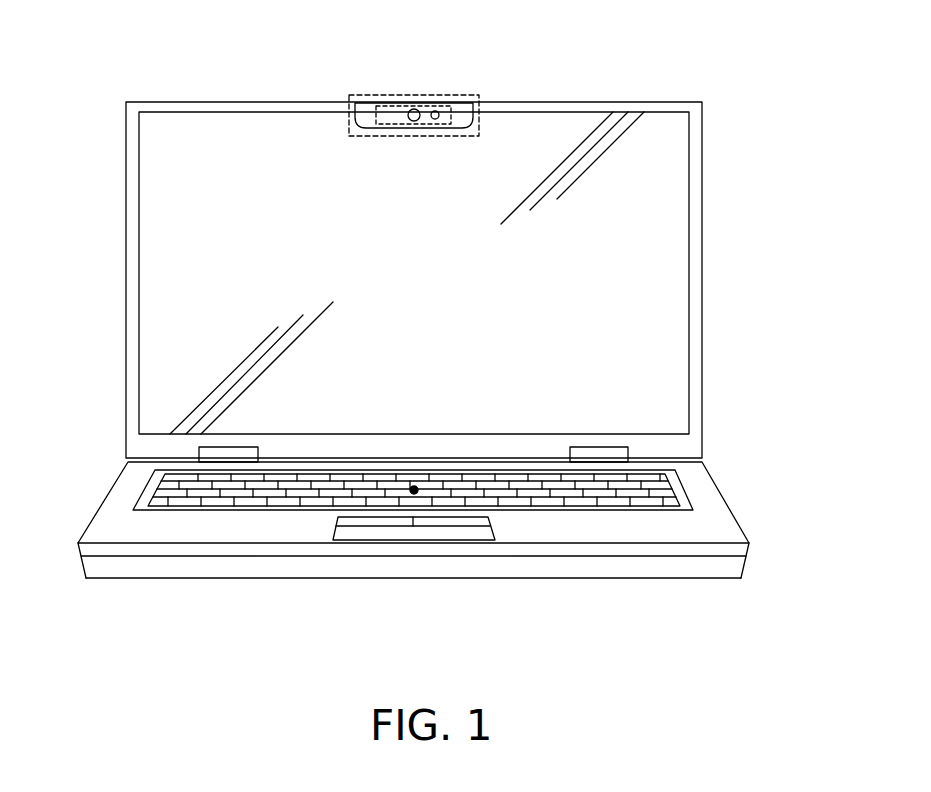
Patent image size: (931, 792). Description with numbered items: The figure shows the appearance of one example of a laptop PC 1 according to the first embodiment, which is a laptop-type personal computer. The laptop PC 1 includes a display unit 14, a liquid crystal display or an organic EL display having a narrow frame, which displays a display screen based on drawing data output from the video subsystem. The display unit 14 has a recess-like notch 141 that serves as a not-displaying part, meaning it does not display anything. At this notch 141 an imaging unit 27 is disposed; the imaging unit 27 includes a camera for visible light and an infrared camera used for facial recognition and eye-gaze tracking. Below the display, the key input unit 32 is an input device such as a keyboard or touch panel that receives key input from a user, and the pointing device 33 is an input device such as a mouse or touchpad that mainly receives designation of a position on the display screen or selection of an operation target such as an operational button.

The laptop PC 1 is at (437, 334).
The display unit 14 is at (652, 247).
The imaging unit 27 is at (388, 104).
The notch 141 is at (463, 95).
The key input unit 32 is at (666, 484).
The pointing device 33 is at (414, 494).